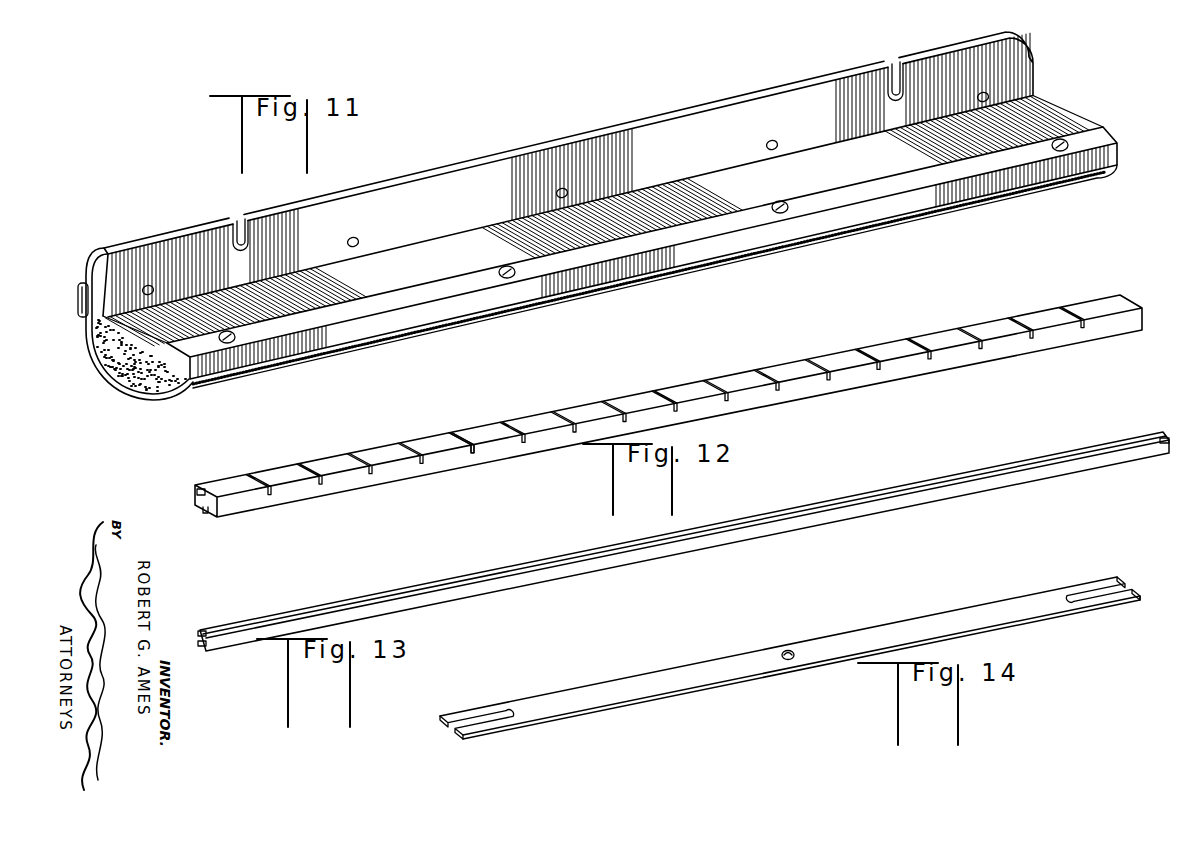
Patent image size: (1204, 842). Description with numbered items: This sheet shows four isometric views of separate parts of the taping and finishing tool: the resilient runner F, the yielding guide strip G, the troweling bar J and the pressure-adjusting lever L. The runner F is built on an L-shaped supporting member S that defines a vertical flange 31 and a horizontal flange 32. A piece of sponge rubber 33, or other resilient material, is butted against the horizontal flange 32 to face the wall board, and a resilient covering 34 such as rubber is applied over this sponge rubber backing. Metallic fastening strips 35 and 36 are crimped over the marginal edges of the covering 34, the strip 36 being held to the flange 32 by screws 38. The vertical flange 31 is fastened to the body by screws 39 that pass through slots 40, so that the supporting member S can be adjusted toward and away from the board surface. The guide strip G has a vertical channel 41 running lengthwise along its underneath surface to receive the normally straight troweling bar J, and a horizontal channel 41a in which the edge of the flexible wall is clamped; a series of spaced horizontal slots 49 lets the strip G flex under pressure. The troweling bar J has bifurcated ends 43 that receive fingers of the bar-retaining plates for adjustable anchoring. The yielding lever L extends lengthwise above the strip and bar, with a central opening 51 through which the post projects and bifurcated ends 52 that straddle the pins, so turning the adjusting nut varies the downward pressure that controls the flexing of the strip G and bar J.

In FIG. 11, the vertical flange 31 is at (447, 171).
In FIG. 11, the L-shaped supporting member S is at (548, 140).
In FIG. 11, the horizontal flange 32 is at (1045, 113).
In FIG. 11, the sponge rubber 33 is at (97, 362).
In FIG. 11, the resilient covering 34 is at (171, 397).
In FIG. 11, the metallic fastening strip 35 is at (77, 300).
In FIG. 11, the metallic fastening strip 36 is at (782, 238).
In FIG. 11, the screws 38 is at (499, 269).
In FIG. 11, the screws 39 is at (358, 240).
In FIG. 11, the slots 40 is at (240, 219).
In FIG. 11, the resilient runner F is at (482, 326).
In FIG. 12, the guide strip G is at (781, 360).
In FIG. 12, the vertical channel 41 is at (207, 508).
In FIG. 12, the horizontal channel 41a is at (194, 490).
In FIG. 12, the horizontal slots 49 is at (465, 436).
In FIG. 13, the troweling bar J is at (826, 502).
In FIG. 13, the bifurcated ends 43 is at (1168, 440).
In FIG. 14, the yielding lever L is at (852, 636).
In FIG. 14, the opening 51 is at (786, 651).
In FIG. 14, the bifurcated ends 52 is at (460, 732).